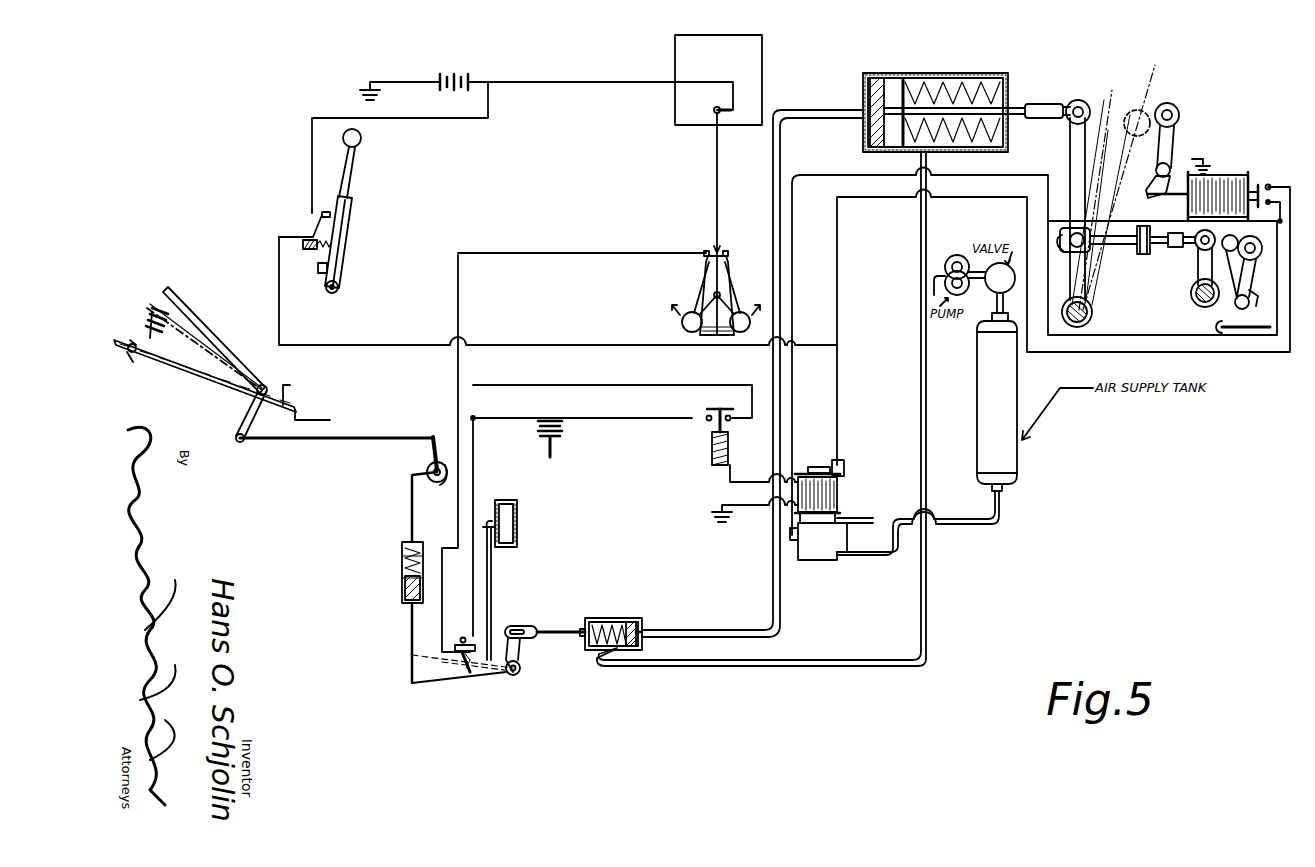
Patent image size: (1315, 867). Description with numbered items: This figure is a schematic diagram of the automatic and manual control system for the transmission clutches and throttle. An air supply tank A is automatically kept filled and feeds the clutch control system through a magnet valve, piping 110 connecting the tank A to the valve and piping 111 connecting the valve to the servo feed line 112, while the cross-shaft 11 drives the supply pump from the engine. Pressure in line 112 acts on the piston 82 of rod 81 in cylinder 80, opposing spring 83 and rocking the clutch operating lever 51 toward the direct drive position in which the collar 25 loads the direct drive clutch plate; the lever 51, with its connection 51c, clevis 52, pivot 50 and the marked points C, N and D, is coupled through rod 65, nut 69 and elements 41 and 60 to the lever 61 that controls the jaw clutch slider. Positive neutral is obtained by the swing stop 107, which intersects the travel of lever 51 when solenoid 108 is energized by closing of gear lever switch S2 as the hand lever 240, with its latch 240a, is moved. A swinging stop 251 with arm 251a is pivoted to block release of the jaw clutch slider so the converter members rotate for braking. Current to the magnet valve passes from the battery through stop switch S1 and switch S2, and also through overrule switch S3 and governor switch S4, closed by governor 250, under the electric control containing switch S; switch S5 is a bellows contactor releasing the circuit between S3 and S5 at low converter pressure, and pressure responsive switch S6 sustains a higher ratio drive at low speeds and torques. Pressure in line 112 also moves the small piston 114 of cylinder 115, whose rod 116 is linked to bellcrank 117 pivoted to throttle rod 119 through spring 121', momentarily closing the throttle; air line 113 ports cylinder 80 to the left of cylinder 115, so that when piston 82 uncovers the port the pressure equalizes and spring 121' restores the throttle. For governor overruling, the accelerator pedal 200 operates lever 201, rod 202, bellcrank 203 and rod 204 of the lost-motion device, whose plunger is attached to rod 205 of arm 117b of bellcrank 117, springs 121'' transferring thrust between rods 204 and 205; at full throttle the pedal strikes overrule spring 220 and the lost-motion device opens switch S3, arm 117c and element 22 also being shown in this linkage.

The cross-shaft 11 is at (957, 256).
The cylinder 22 is at (400, 552).
The collar 25 is at (838, 538).
The link 41 is at (1203, 232).
The pivot 50 is at (1093, 313).
The clutch operating lever 51 is at (1125, 85).
The lever connection 51c is at (1068, 101).
The clevis 52 is at (1058, 240).
The pivot 60 is at (1201, 290).
The lever 61 is at (1197, 273).
The rod 65 is at (1112, 238).
The adjusting nut 69 is at (1137, 253).
The cylinder 80 is at (985, 66).
The piston rod 81 is at (888, 151).
The clutch shifting piston 82 is at (898, 68).
The spring 83 is at (1008, 94).
The swing stop 107 is at (1171, 164).
The solenoid 108 is at (1216, 178).
The piping 110 is at (988, 526).
The piping 111 is at (794, 554).
The servo feed line 112 is at (812, 110).
The air line 113 is at (924, 410).
The small piston 114 is at (633, 618).
The throttle control cylinder 115 is at (602, 618).
The rod 116 is at (550, 630).
The bellcrank 117 is at (525, 649).
The arm of bellcrank 117b is at (490, 672).
The switch actuating arm 117c is at (462, 668).
The throttle rod 119 is at (492, 612).
The restoring spring 121' is at (592, 580).
The springs 121'' is at (387, 574).
The accelerator pedal 200 is at (218, 310).
The lever 201 is at (242, 420).
The rod 202 is at (400, 436).
The bellcrank 203 is at (430, 452).
The rod 204 is at (412, 498).
The rod 205 is at (412, 622).
The overrule spring 220 is at (150, 314).
The hand lever 240 is at (352, 226).
The lever latch 240a is at (305, 267).
The governor 250 is at (697, 304).
The swinging stop 251 is at (1250, 308).
The arm of stop 251a is at (1222, 328).
The solenoid switch S is at (715, 109).
The stop switch S1 is at (1269, 183).
The gear lever switch S2 is at (313, 237).
The overrule switch S3 is at (462, 640).
The governor switch S4 is at (726, 254).
The bellows contactor switch S5 is at (702, 430).
The dynamometric pressure responsive switch S6 is at (552, 418).
The air supply tank A is at (1012, 454).
The pivot center C is at (1078, 99).
The position D is at (1140, 111).
The neutral position N is at (1117, 83).